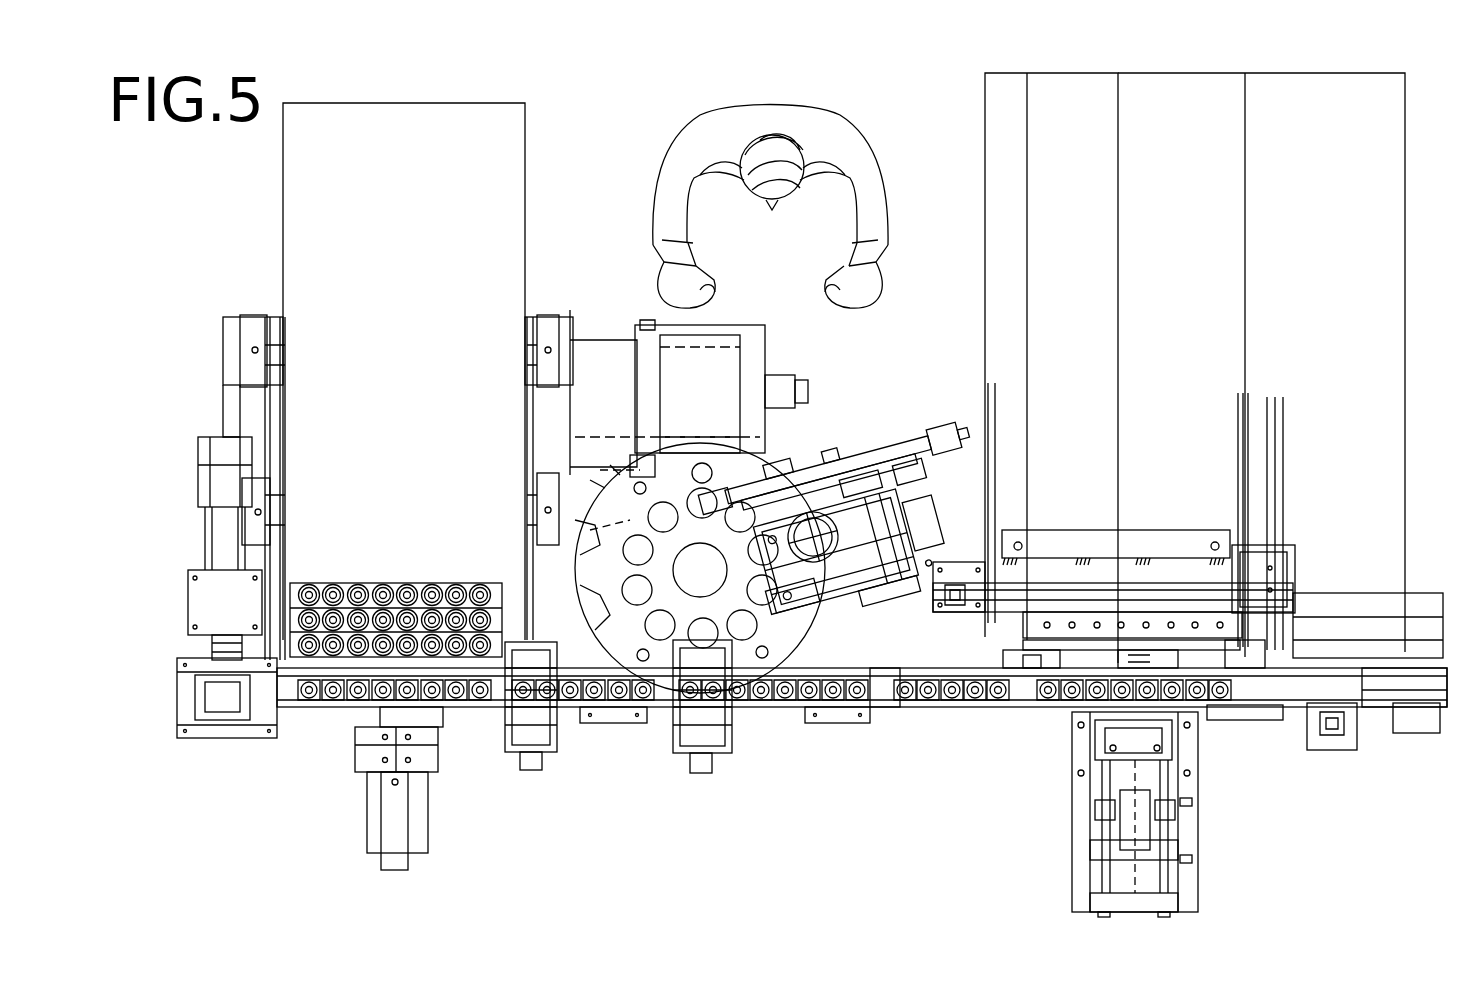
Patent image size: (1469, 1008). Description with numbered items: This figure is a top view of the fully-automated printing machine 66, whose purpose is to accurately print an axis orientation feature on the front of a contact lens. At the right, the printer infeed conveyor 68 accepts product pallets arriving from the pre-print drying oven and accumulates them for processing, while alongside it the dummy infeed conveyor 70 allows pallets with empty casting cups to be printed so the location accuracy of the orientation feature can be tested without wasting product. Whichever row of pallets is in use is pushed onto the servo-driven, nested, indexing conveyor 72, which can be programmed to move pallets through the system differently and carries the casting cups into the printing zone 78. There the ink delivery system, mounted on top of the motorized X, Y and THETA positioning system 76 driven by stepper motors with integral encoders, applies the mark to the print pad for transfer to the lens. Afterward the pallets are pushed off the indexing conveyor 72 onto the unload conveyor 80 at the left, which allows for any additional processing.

The printing machine 66 is at (877, 742).
The printer infeed conveyor 68 is at (1058, 128).
The dummy infeed conveyor 70 is at (1363, 133).
The nested indexing conveyor 72 is at (1215, 707).
The X, Y and THETA positioning system 76 is at (883, 446).
The printing zone 78 is at (815, 445).
The unload conveyor 80 is at (507, 172).